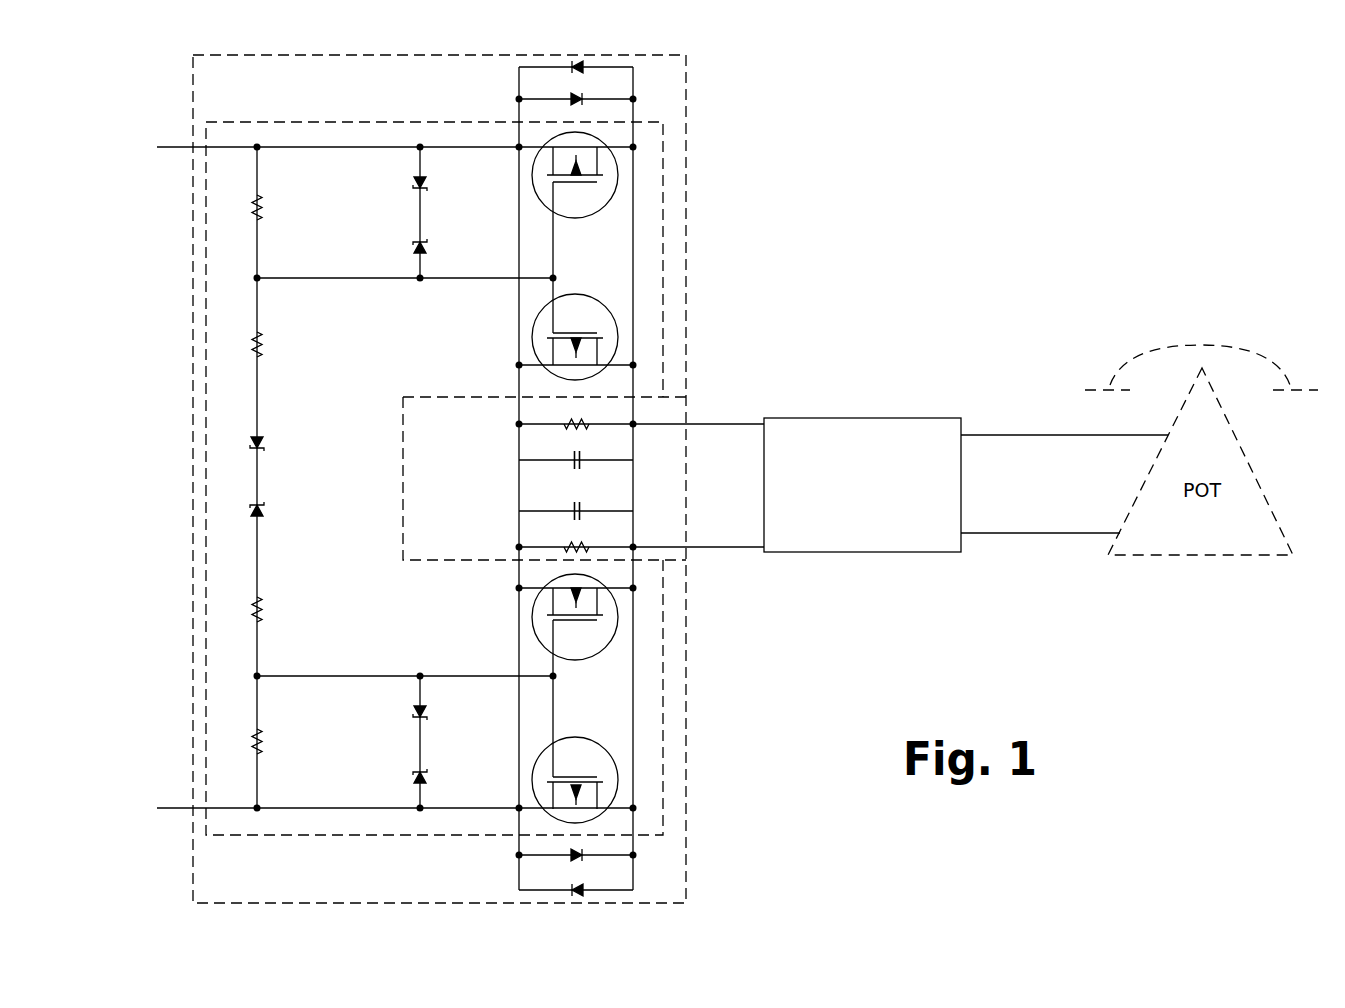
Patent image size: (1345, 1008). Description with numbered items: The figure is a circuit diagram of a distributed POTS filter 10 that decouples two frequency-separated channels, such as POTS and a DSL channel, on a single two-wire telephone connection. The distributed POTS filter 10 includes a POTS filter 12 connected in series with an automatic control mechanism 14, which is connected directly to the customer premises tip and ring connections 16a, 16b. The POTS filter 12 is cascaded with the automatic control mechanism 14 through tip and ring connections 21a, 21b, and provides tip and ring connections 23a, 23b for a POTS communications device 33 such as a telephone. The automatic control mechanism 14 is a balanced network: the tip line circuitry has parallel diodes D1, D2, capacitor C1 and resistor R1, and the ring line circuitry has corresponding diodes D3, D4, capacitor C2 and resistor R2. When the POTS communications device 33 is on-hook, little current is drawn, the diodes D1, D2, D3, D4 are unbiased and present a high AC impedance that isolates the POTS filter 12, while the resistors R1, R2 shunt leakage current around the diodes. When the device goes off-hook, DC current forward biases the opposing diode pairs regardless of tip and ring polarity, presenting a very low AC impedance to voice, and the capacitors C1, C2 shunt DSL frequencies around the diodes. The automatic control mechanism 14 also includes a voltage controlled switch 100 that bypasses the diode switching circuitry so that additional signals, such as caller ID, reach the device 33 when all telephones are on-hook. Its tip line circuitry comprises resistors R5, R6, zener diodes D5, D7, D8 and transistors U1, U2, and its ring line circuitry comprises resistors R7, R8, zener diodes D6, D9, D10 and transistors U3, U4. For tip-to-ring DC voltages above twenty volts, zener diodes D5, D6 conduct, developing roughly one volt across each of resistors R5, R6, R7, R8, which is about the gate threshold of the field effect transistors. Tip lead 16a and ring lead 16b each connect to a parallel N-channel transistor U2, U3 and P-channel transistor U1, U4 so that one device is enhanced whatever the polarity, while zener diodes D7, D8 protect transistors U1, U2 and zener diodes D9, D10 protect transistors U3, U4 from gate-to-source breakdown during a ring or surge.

The distributed POTS filter 10 is at (882, 182).
The POTS filter 12 is at (862, 418).
The automatic control mechanism 14 is at (229, 86).
The tip connection 16a is at (169, 147).
The ring connection 16b is at (169, 808).
The tip connection 21a is at (700, 424).
The ring connection 21b is at (700, 547).
The tip connection 23a is at (980, 435).
The ring connection 23b is at (995, 533).
The POTS communications device 33 is at (1203, 340).
The voltage controlled switch 100 is at (428, 385).
The resistor R1 is at (572, 428).
The resistor R2 is at (572, 543).
The resistor R5 is at (295, 213).
The resistor R6 is at (262, 350).
The resistor R7 is at (262, 614).
The resistor R8 is at (292, 740).
The capacitor C1 is at (580, 466).
The capacitor C2 is at (576, 504).
The diode D1 is at (574, 69).
The diode D2 is at (579, 97).
The diode D3 is at (577, 858).
The diode D4 is at (574, 888).
The zener diode D5 is at (300, 432).
The zener diode D6 is at (262, 511).
The zener diode D7 is at (416, 184).
The zener diode D8 is at (416, 247).
The zener diode D9 is at (425, 712).
The zener diode D10 is at (425, 777).
The P-channel field effect transistor U1 is at (559, 218).
The N-channel field effect transistor U2 is at (565, 297).
The N-channel field effect transistor U3 is at (562, 660).
The P-channel field effect transistor U4 is at (565, 740).